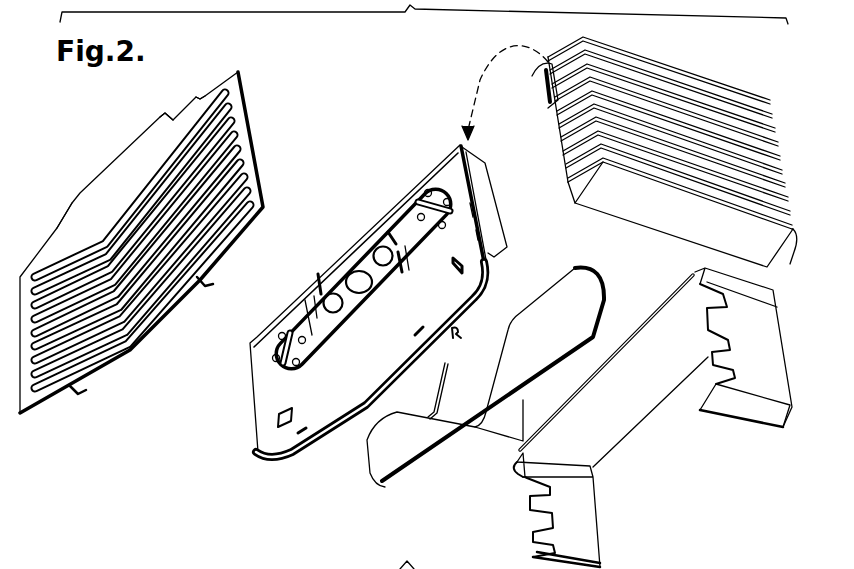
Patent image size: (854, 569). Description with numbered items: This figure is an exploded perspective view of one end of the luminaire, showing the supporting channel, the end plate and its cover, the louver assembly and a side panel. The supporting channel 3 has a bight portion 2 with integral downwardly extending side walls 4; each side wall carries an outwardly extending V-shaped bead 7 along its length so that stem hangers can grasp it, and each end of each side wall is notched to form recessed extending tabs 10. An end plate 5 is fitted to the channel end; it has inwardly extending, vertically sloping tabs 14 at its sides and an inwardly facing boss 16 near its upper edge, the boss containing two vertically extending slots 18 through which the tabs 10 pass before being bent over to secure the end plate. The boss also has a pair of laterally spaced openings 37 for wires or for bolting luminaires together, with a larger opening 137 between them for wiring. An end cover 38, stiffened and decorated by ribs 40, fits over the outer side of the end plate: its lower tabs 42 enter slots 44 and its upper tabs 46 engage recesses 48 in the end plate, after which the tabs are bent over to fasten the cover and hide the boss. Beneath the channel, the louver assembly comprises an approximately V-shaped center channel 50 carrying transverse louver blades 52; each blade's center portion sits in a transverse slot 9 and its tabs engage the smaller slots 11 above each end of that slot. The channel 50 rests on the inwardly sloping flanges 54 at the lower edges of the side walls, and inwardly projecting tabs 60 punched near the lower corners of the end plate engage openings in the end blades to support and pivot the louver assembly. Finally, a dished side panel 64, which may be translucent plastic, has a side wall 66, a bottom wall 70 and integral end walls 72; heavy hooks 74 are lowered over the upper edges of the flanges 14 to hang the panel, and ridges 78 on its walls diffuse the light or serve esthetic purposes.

The bight portion 2 is at (618, 359).
The supporting channel 3 is at (651, 418).
The side wall 4 is at (782, 361).
The end plate 5 is at (366, 360).
The V-shaped bead 7 is at (515, 473).
The slot 9 is at (439, 393).
The tab 10 is at (704, 321).
The slot 11 is at (471, 339).
The tab 14 is at (500, 225).
The boss 16 is at (367, 298).
The slot 18 is at (318, 283).
The opening 37 is at (337, 293).
The end cover 38 is at (240, 78).
The rib 40 is at (238, 150).
The tab 42 is at (209, 287).
The slot 44 is at (421, 324).
The tab 46 is at (198, 97).
The recess 48 is at (392, 207).
The center channel 50 is at (508, 327).
The louver blade 52 is at (357, 429).
The flange 54 is at (748, 417).
The tab 60 is at (285, 411).
The side panel 64 is at (631, 157).
The side wall 66 is at (792, 242).
The bottom wall 70 is at (632, 217).
The end wall 72 is at (560, 144).
The hook 74 is at (545, 93).
The ridge 78 is at (685, 91).
The opening 137 is at (361, 299).